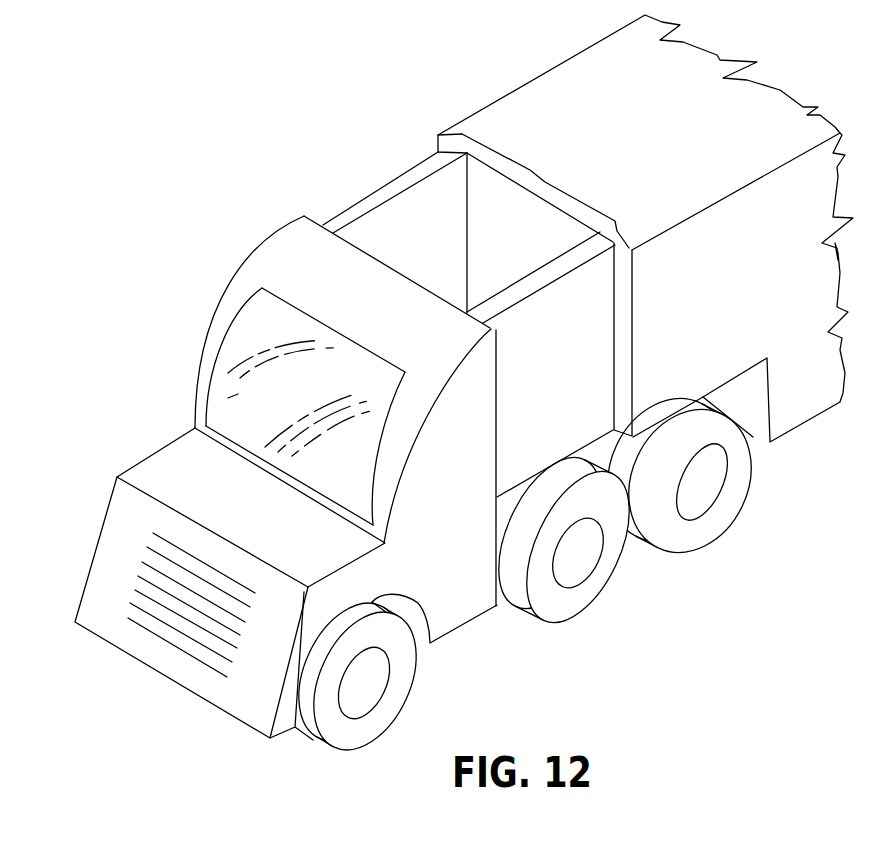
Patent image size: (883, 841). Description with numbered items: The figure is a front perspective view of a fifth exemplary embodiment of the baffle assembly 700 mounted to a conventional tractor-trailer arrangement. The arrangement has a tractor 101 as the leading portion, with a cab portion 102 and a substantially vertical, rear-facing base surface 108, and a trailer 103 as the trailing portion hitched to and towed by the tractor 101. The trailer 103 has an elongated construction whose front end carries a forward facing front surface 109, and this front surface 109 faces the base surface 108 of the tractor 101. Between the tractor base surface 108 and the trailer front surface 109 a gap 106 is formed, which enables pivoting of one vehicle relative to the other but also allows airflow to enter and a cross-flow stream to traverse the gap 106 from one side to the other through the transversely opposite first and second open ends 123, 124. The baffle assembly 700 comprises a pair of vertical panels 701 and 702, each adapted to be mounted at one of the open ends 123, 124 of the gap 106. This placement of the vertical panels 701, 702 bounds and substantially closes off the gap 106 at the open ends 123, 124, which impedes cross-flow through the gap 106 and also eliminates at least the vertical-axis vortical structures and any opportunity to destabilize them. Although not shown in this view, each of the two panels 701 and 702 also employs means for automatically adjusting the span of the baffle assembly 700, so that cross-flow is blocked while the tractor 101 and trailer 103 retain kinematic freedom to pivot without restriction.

The tractor 101 is at (142, 647).
The cab portion 102 is at (415, 333).
The trailer 103 is at (793, 240).
The gap 106 is at (547, 250).
The base surface 108 is at (497, 457).
The front surface 109 is at (630, 284).
The first open end 123 is at (398, 150).
The second open end 124 is at (583, 335).
The baffle assembly 700 is at (545, 191).
The vertical panel 701 is at (560, 372).
The vertical panel 702 is at (433, 242).